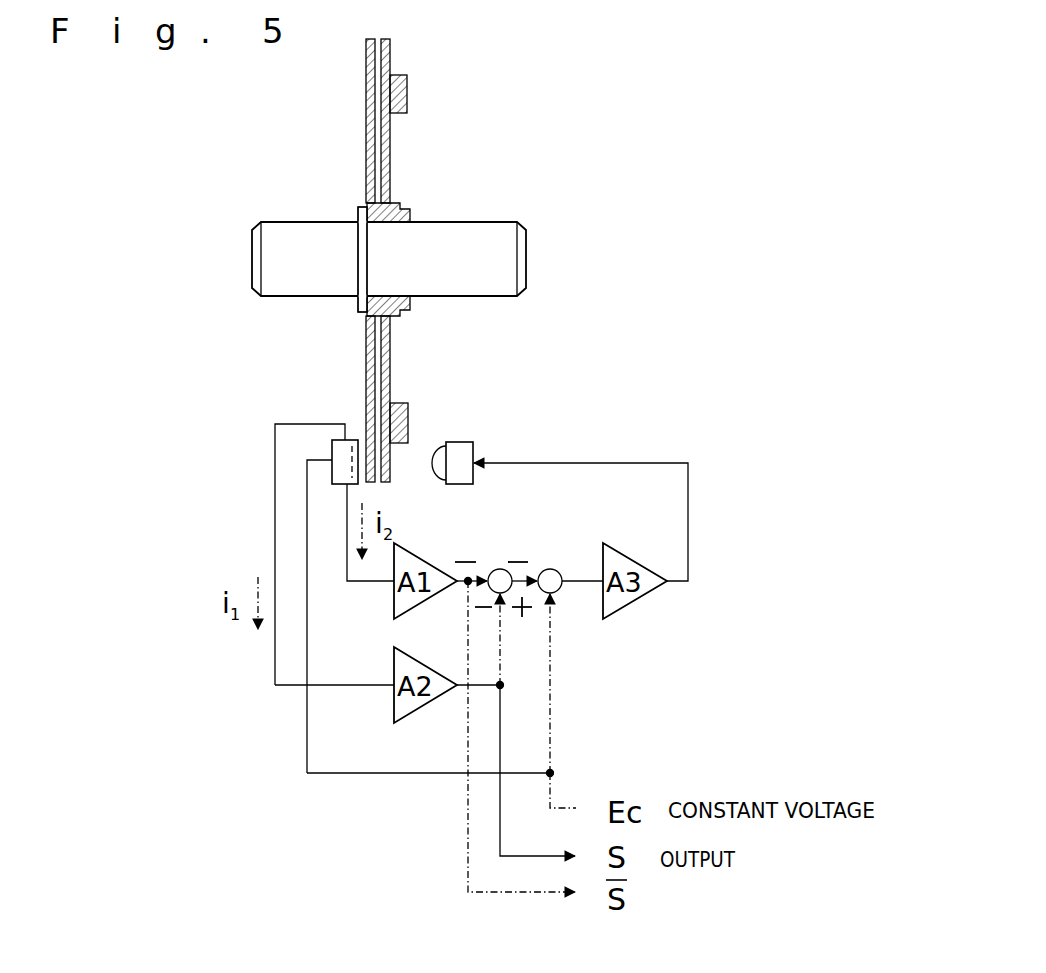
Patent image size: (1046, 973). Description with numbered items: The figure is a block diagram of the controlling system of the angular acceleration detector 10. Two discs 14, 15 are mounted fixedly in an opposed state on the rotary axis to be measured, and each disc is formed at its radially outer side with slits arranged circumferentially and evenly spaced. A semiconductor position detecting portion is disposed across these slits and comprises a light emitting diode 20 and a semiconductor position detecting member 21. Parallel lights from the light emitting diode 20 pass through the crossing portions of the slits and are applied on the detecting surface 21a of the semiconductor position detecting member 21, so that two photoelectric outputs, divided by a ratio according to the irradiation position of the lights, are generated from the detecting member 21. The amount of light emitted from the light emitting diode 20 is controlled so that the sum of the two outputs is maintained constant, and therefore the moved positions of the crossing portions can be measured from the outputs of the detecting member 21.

The angular acceleration detector 10 is at (512, 184).
The disc 14 is at (366, 73).
The disc 15 is at (389, 59).
The light emitting diode 20 is at (457, 442).
The semiconductor position detecting member 21 is at (279, 446).
The detecting surface 21a is at (362, 472).